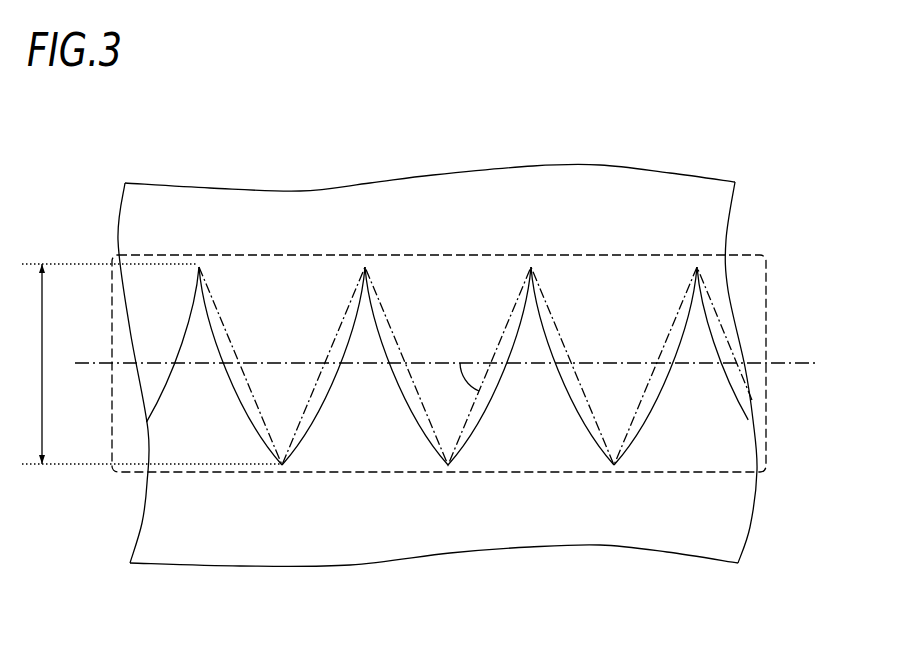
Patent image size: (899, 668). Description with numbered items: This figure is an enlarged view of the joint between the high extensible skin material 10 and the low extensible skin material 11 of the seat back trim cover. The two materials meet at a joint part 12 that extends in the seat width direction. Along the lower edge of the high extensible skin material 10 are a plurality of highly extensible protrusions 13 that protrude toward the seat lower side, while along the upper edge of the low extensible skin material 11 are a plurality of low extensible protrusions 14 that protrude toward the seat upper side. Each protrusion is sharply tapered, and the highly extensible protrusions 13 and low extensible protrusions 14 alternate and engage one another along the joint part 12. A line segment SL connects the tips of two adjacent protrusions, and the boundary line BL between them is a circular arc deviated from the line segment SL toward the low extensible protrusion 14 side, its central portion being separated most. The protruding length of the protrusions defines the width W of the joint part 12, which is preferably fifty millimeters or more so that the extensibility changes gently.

The high extensible skin material 10 is at (717, 225).
The low extensible skin material 11 is at (730, 522).
The joint part 12 is at (767, 332).
The highly extensible protrusion 13 is at (475, 371).
The low extensible protrusion 14 is at (448, 371).
The line segment SL is at (395, 345).
The boundary line BL is at (408, 412).
The width of the joint part W is at (145, 364).